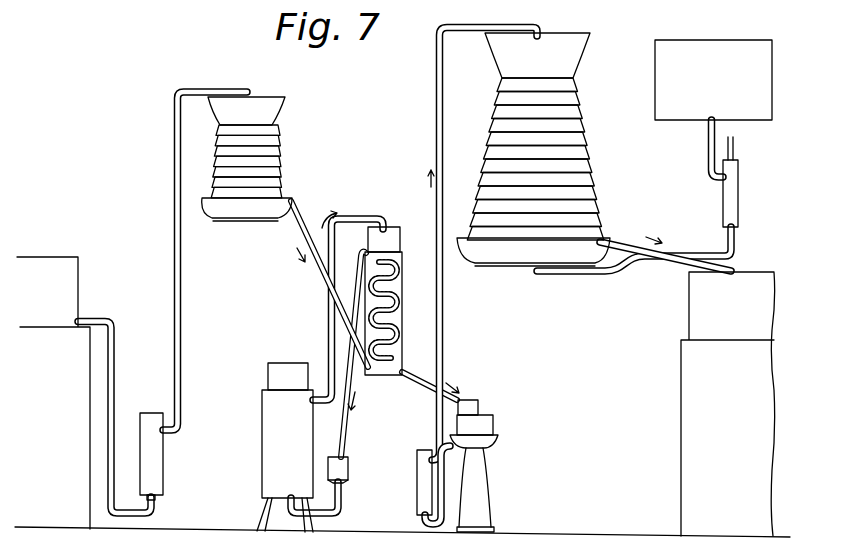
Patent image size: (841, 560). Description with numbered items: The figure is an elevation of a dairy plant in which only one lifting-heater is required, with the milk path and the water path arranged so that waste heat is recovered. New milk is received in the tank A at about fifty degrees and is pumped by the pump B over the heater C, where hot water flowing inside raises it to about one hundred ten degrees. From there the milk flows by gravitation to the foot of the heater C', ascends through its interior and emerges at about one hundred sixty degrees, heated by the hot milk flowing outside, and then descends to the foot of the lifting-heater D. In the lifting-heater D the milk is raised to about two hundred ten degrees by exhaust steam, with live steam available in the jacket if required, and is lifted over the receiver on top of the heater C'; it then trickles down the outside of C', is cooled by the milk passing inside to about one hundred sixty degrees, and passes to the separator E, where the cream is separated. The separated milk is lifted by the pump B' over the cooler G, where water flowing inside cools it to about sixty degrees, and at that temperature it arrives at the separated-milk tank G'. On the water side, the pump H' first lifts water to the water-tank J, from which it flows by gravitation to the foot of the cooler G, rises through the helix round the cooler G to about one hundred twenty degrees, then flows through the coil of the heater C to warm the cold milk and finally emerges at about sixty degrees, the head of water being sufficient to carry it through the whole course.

The tank A is at (53, 393).
The pump B is at (163, 456).
The heater C is at (247, 158).
The heater C' is at (395, 301).
The lifting-heater D is at (285, 447).
The separator E is at (482, 422).
The pump B' is at (406, 482).
The cooler G is at (533, 149).
The separated-milk tank G' is at (728, 404).
The water-tank J is at (713, 80).
The pump H' is at (748, 182).